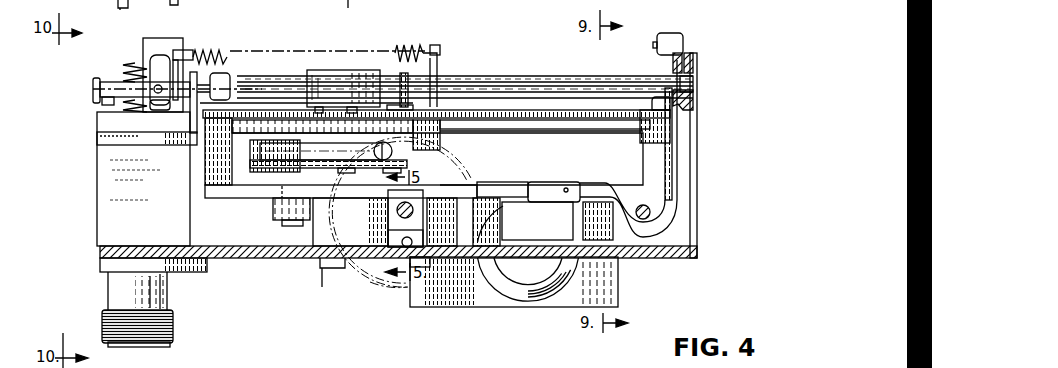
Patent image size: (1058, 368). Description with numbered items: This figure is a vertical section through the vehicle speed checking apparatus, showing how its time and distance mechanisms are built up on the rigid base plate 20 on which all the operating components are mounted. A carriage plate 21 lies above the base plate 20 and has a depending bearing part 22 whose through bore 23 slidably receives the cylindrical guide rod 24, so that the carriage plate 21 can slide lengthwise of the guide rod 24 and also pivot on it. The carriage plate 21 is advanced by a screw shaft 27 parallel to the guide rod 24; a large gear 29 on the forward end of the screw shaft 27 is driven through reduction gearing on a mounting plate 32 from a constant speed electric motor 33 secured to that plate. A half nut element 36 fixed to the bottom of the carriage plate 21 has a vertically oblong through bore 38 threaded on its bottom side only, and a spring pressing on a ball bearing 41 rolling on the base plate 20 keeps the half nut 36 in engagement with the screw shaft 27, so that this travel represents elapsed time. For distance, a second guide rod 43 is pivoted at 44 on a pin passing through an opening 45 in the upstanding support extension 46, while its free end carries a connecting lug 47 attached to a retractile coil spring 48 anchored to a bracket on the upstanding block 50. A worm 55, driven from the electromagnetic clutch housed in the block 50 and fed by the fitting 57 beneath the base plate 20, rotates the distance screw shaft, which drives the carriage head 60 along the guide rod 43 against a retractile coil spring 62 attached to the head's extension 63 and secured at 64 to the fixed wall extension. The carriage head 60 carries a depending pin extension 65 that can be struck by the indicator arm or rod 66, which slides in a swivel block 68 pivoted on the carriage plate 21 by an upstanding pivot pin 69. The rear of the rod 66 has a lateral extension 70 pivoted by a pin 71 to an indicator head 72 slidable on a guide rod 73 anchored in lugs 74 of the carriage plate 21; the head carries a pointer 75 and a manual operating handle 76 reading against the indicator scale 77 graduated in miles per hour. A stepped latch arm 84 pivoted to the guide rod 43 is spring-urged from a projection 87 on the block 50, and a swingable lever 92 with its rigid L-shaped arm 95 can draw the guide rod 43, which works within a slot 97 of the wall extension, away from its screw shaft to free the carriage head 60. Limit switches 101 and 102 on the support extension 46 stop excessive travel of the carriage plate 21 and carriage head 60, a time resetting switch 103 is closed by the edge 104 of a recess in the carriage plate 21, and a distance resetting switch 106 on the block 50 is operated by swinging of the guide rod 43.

The base plate 20 is at (307, 252).
The carriage plate 21 is at (257, 259).
The bearing part 22 is at (688, 225).
The through bore 23 is at (650, 205).
The guide rod 24 is at (663, 217).
The screw shaft 27 is at (398, 220).
The gear 29 is at (377, 280).
The mounting plate 32 is at (460, 298).
The electric motor 33 is at (528, 283).
The half nut element 36 is at (387, 230).
The through bore 38 is at (413, 201).
The ball bearing 41 is at (420, 252).
The guide rod 43 is at (542, 80).
The pivot 44 is at (697, 63).
The opening 45 is at (694, 82).
The support extension 46 is at (690, 120).
The connecting lug 47 is at (102, 102).
The retractile coil spring 48 is at (97, 88).
The block 50 is at (107, 183).
The worm 55 is at (122, 72).
The fitting 57 is at (175, 328).
The carriage head 60 is at (328, 77).
The retractile coil spring 62 is at (420, 44).
The extension 63 is at (437, 47).
The spring anchorage 64 is at (177, 51).
The pin extension 65 is at (343, 165).
The indicator arm or rod 66 is at (323, 152).
The swivel block 68 is at (243, 165).
The pivot pin 69 is at (290, 227).
The lateral extension 70 is at (393, 152).
The pin 71 is at (390, 168).
The indicator head 72 is at (438, 156).
The guide rod 73 is at (528, 131).
The lugs 74 is at (210, 158).
The pointer 75 is at (423, 97).
The manual operating handle 76 is at (430, 80).
The indicator scale 77 is at (587, 130).
The stepped latch arm 84 is at (218, 55).
The projection 87 is at (145, 39).
The swingable lever 92 is at (177, 140).
The L-shaped arm 95 is at (231, 88).
The slot 97 is at (178, 78).
The limit switch 101 is at (662, 100).
The limit switch 102 is at (674, 37).
The time resetting switch 103 is at (553, 188).
The edge 104 is at (505, 192).
The distance resetting switch 106 is at (163, 107).